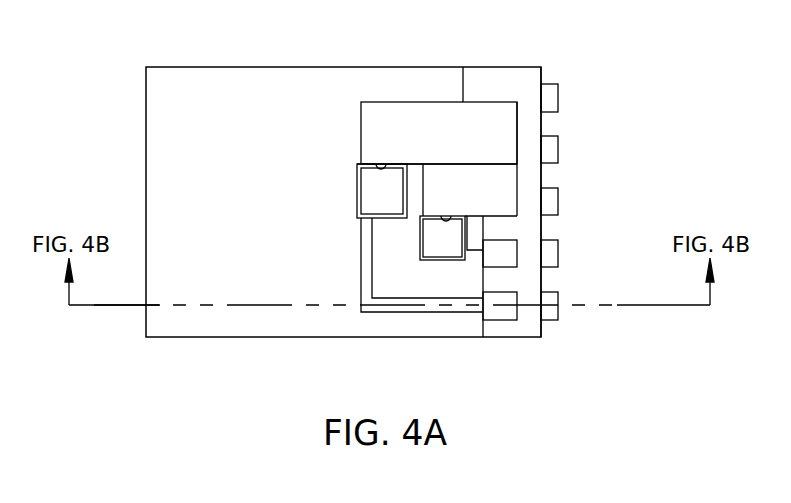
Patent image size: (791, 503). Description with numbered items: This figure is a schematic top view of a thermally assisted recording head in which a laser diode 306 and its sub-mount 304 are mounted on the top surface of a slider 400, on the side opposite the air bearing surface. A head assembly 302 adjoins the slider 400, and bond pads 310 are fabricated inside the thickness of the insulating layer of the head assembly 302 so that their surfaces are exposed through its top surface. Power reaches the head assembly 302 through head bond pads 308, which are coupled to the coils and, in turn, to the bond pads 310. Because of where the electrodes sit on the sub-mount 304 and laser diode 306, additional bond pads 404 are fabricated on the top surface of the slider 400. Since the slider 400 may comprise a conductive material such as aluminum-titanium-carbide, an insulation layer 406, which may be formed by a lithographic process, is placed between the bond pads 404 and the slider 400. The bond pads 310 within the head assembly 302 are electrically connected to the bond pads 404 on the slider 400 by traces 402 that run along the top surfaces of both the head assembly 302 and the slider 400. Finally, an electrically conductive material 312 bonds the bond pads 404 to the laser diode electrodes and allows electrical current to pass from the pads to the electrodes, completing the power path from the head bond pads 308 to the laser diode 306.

The slider 400 is at (225, 88).
The head assembly 302 is at (533, 78).
The sub-mount 304 is at (500, 113).
The laser diode 306 is at (503, 178).
The head bond pads 308 is at (558, 97).
The bond pads 310 is at (512, 298).
The electrically conductive material 312 is at (382, 164).
The traces 402 is at (368, 250).
The bond pads 404 is at (378, 193).
The insulation layer 406 is at (357, 208).